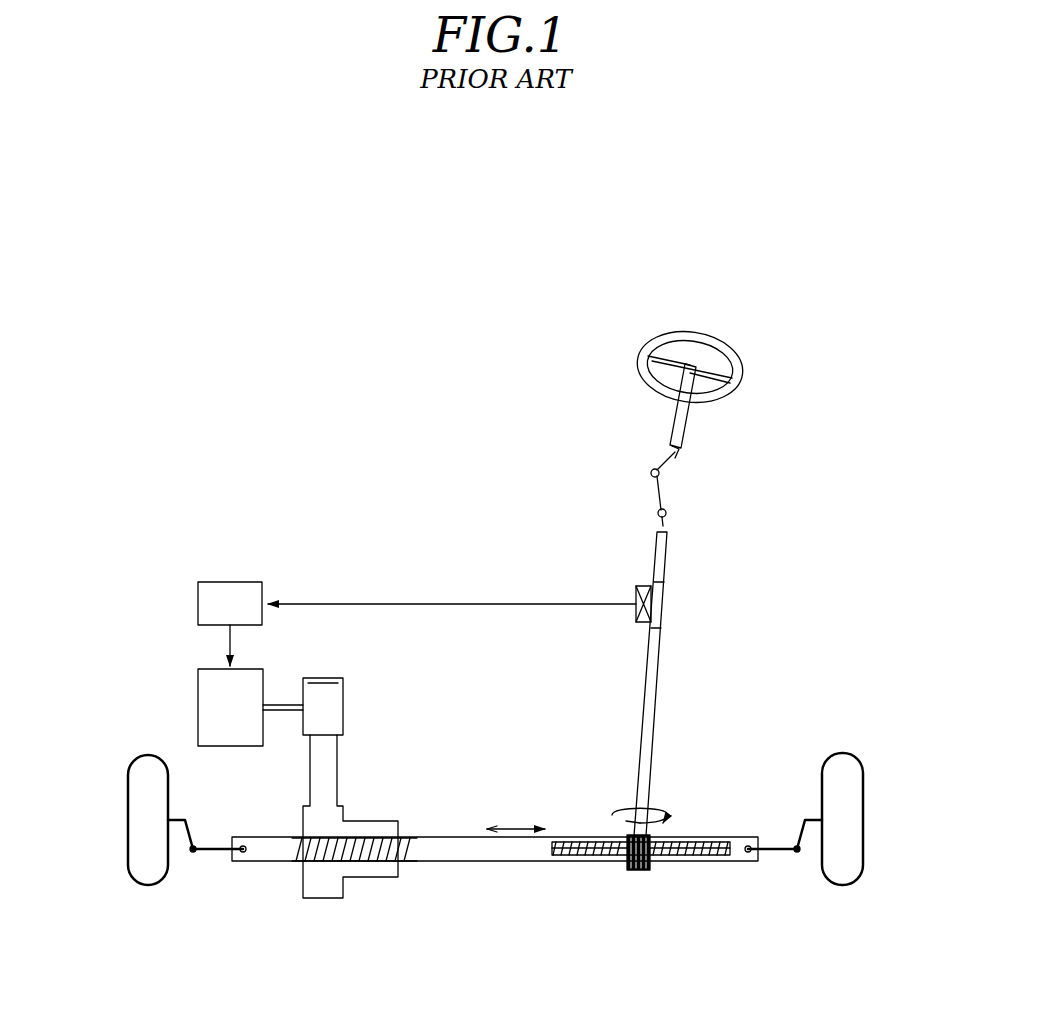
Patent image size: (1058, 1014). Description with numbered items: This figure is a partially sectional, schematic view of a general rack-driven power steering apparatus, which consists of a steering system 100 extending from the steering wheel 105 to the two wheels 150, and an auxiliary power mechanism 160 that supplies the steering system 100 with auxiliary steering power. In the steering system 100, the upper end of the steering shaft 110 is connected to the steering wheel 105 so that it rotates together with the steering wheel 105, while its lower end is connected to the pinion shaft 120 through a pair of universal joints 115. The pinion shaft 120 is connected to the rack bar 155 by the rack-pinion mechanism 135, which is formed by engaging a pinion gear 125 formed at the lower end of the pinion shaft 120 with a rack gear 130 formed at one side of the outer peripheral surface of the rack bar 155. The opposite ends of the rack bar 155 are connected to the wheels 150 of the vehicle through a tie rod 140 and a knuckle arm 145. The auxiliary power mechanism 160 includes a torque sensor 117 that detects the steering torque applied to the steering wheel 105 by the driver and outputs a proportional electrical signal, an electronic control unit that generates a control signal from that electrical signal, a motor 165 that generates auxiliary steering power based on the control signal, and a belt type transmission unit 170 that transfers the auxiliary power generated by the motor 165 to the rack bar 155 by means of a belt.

The steering system 100 is at (742, 328).
The steering wheel 105 is at (640, 358).
The steering shaft 110 is at (692, 418).
The universal joints 115 is at (666, 513).
The torque sensor 117 is at (646, 587).
The pinion shaft 120 is at (660, 654).
The pinion gear 125 is at (639, 871).
The rack gear 130 is at (692, 862).
The rack-pinion mechanism 135 is at (702, 937).
The tie rod 140 is at (776, 850).
The knuckle arm 145 is at (797, 832).
The wheels 150 is at (138, 790).
The rack bar 155 is at (508, 862).
The auxiliary power mechanism 160 is at (362, 530).
The motor 165 is at (198, 680).
The belt type transmission unit 170 is at (342, 758).